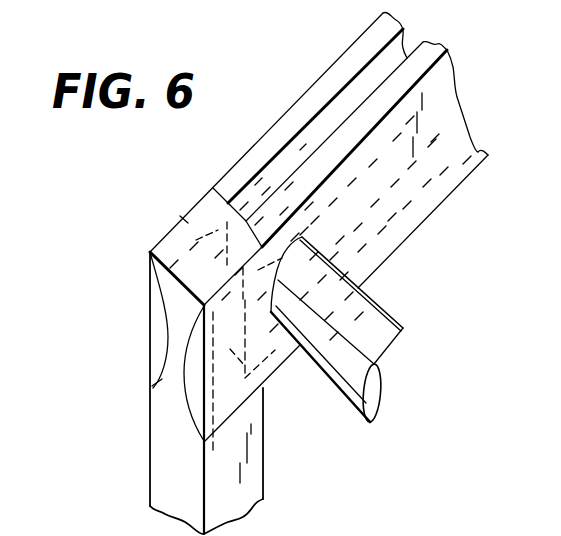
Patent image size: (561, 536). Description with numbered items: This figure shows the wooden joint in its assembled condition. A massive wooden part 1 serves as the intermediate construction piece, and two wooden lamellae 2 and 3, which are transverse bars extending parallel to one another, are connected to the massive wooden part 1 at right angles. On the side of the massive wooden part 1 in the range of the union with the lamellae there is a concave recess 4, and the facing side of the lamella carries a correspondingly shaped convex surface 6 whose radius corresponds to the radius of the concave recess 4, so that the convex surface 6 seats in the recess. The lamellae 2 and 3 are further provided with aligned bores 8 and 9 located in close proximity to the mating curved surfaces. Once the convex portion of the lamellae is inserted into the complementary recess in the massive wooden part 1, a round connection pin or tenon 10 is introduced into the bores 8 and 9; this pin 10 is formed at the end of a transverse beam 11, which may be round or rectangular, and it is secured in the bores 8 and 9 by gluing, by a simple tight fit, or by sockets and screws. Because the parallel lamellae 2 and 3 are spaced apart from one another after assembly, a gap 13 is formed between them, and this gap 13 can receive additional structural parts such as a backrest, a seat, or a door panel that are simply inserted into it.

The massive wooden part 1 is at (157, 478).
The lamella 2 is at (266, 134).
The lamella 3 is at (452, 117).
The concave recess 4 is at (101, 320).
The convex surface 6 is at (194, 373).
The bore 8 is at (171, 212).
The bore 9 is at (290, 277).
The connection pin 10 is at (239, 338).
The transverse beam 11 is at (377, 364).
The gap 13 is at (382, 68).